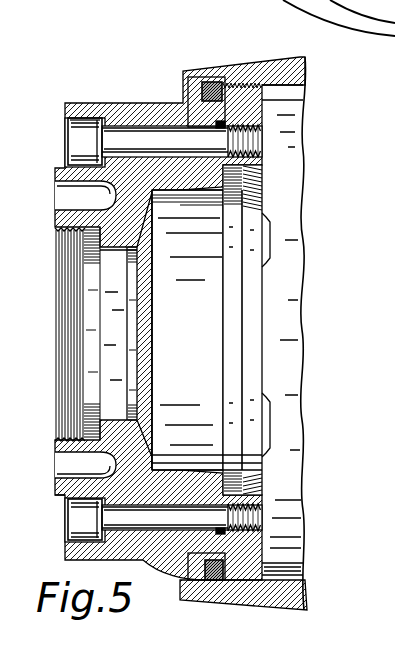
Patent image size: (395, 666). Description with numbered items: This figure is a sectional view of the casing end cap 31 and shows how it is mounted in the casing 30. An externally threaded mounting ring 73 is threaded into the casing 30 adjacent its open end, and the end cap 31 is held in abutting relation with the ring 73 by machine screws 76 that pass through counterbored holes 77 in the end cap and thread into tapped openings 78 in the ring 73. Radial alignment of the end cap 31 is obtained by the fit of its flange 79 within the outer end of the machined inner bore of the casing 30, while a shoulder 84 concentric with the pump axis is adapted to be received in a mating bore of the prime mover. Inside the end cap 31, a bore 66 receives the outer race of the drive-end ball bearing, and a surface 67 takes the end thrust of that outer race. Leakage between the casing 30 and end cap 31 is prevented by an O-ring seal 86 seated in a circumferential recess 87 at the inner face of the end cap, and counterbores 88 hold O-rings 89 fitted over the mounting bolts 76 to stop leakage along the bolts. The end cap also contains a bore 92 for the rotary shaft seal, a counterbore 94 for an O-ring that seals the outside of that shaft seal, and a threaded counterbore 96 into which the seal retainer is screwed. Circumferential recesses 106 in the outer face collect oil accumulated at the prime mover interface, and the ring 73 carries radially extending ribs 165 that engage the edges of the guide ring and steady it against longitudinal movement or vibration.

The casing 30 is at (304, 288).
The end cap 31 is at (130, 103).
The bore 66 is at (173, 473).
The surface 67 is at (152, 194).
The mounting ring 73 is at (265, 124).
The machine screws 76 is at (76, 143).
The counterbored holes 77 is at (80, 120).
The tapped openings 78 is at (280, 132).
The flange 79 is at (180, 577).
The shoulder 84 is at (60, 497).
The O-ring seal 86 is at (219, 120).
The circumferential recess 87 is at (207, 82).
The counterbores 88 is at (215, 122).
The O-rings 89 is at (198, 110).
The bore 92 is at (122, 417).
The counterbore 94 is at (93, 427).
The threaded counterbore 96 is at (63, 438).
The circumferential recesses 106 is at (85, 330).
The ribs 165 is at (278, 100).